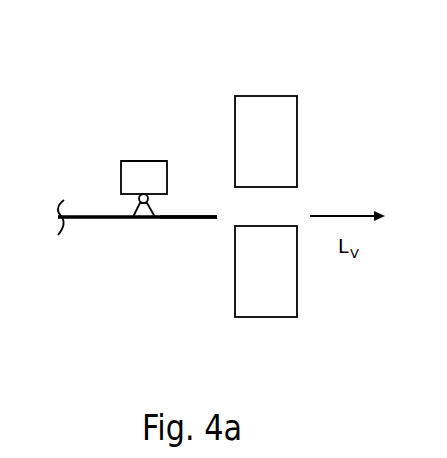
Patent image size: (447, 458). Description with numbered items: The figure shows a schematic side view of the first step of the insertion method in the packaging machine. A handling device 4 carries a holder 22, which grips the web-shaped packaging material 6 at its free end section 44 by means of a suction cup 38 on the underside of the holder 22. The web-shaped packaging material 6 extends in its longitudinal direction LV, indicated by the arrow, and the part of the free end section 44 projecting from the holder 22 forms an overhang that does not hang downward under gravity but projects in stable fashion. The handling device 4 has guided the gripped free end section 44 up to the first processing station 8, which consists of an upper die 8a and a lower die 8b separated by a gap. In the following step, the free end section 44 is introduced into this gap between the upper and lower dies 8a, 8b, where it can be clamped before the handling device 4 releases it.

The handling device 4 is at (102, 146).
The web-shaped packaging material 6 is at (95, 219).
The first processing station 8 is at (312, 206).
The upper die 8a is at (262, 114).
The lower die 8b is at (277, 303).
The holder 22 is at (146, 161).
The suction cups 38 is at (137, 219).
The free end section 44 is at (195, 284).